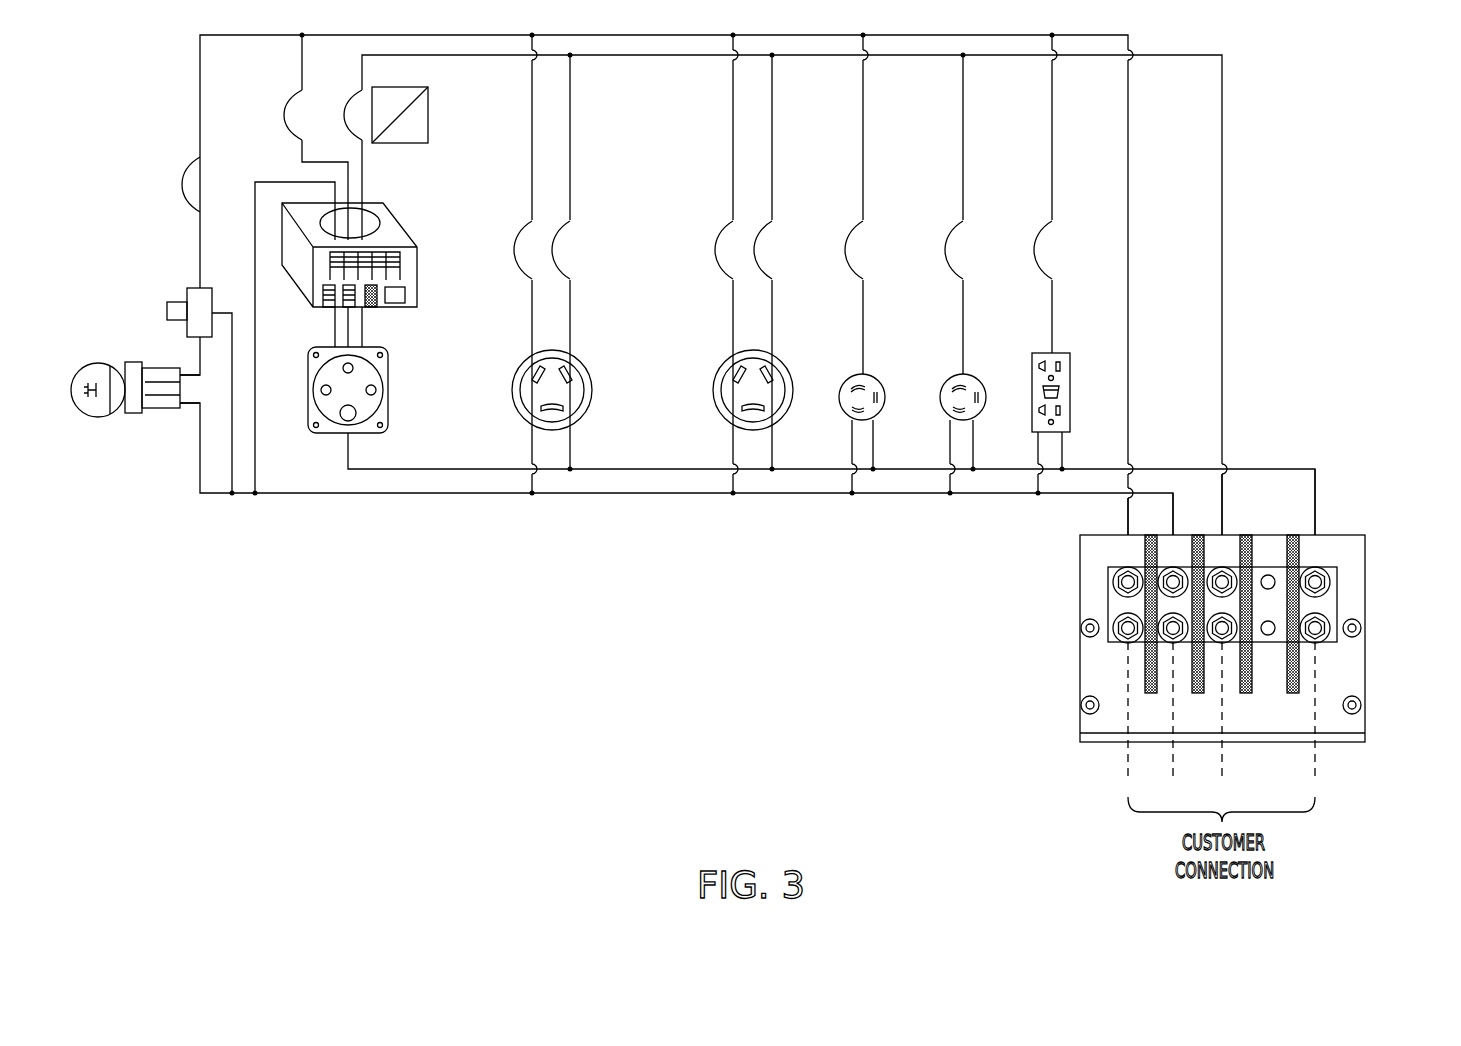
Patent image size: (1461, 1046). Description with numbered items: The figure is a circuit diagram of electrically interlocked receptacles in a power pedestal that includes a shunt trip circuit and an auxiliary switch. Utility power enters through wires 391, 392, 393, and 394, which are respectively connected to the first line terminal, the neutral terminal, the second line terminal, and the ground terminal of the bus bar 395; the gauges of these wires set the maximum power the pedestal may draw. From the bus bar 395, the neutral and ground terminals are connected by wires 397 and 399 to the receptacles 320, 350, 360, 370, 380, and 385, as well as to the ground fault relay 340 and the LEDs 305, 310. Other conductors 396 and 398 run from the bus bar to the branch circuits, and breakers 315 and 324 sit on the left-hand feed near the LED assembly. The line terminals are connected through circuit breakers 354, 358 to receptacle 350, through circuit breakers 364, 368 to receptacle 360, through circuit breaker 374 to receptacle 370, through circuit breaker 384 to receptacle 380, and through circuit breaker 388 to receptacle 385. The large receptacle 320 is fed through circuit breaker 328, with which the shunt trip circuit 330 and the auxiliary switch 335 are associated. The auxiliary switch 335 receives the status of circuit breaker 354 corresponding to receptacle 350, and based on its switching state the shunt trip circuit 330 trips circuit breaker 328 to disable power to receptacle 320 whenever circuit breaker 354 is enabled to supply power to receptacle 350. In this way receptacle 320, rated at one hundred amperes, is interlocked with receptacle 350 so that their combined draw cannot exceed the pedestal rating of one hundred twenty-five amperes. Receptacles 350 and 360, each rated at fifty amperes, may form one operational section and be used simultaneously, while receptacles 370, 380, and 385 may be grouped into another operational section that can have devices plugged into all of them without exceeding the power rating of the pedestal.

The LED 305 is at (103, 366).
The LED 310 is at (187, 294).
The 20A circuit breaker 315 is at (196, 159).
The receptacle 320 is at (388, 390).
The 100A circuit breaker 324 is at (296, 92).
The circuit breaker 328 is at (356, 92).
The shunt trip circuit 330 is at (400, 87).
The auxiliary switch 335 is at (428, 118).
The ground fault relay 340 is at (417, 275).
The receptacle 350 is at (598, 337).
The circuit breaker 354 is at (523, 222).
The circuit breaker 358 is at (566, 232).
The receptacle 360 is at (727, 353).
The circuit breaker 364 is at (724, 222).
The circuit breaker 368 is at (757, 250).
The receptacle 370 is at (878, 375).
The circuit breaker 374 is at (853, 222).
The receptacle 380 is at (975, 375).
The circuit breaker 384 is at (953, 222).
The receptacle 385 is at (1072, 366).
The circuit breaker 388 is at (1042, 222).
The wire 391 is at (1128, 757).
The wire 392 is at (1173, 757).
The wire 393 is at (1222, 757).
The wire 394 is at (1315, 757).
The bus bar 395 is at (1366, 586).
The L1 conductor 396 is at (1126, 530).
The wire 397 is at (1198, 498).
The L2 conductor 398 is at (1224, 437).
The wire 399 is at (1317, 506).